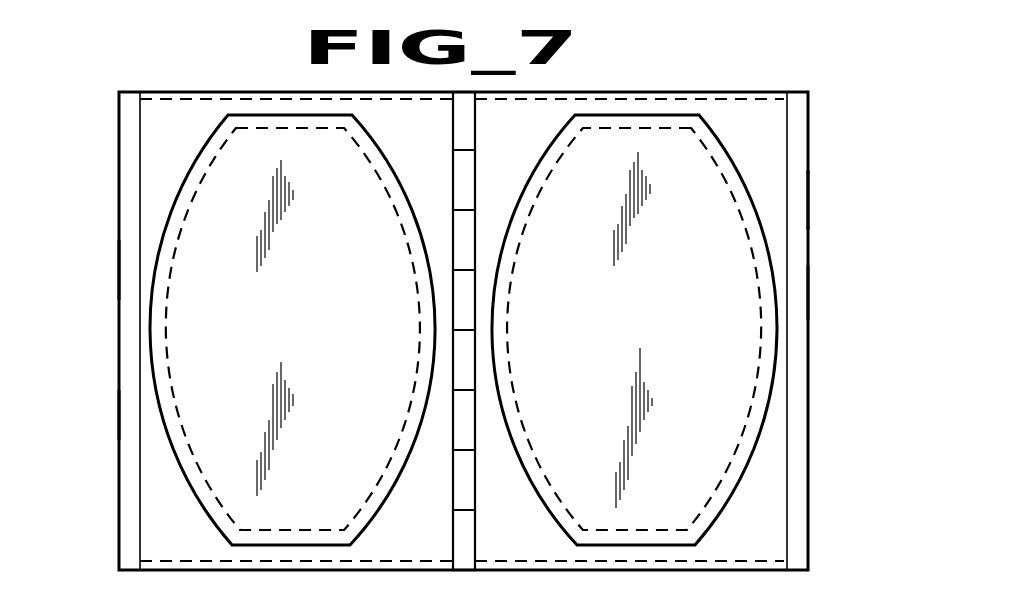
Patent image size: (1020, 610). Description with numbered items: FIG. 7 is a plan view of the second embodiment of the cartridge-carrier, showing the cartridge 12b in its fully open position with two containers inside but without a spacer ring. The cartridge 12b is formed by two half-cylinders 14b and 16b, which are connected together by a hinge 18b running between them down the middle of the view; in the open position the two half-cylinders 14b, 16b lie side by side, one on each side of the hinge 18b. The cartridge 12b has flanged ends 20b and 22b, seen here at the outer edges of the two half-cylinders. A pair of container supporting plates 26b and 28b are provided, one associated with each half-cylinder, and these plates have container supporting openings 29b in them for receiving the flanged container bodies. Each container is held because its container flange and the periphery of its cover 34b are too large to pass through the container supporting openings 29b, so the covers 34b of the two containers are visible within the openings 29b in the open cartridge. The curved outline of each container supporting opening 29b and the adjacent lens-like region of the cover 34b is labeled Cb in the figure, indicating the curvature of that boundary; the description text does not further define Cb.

The cartridge 12b is at (748, 90).
The half-cylinder 14b is at (119, 268).
The half-cylinder 16b is at (808, 198).
The hinge 18b is at (466, 564).
The flanged end 20b is at (128, 413).
The flanged end 22b is at (800, 293).
The container supporting plate 26b is at (153, 128).
The container supporting plate 28b is at (772, 142).
The container supporting opening 29b is at (165, 325).
The cover 34b is at (465, 330).
The lens curve Cb is at (172, 228).